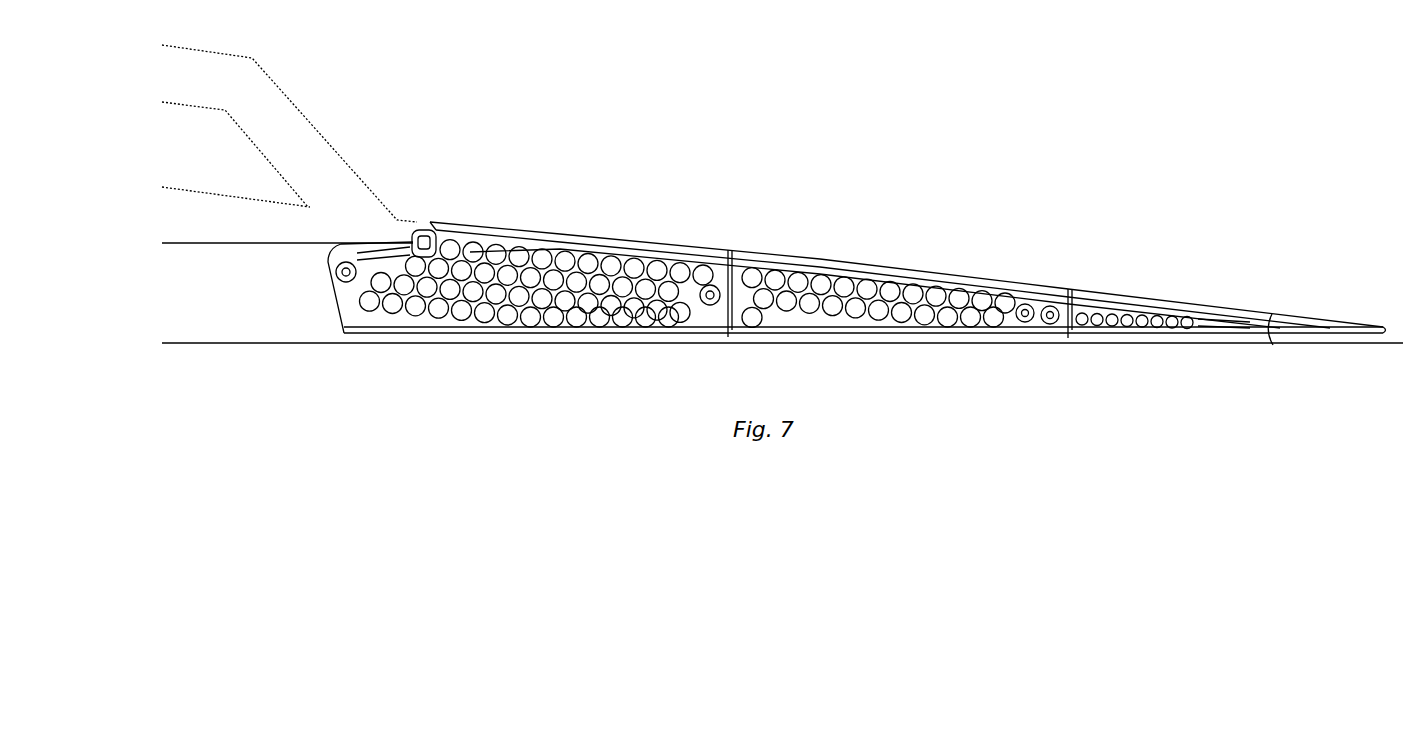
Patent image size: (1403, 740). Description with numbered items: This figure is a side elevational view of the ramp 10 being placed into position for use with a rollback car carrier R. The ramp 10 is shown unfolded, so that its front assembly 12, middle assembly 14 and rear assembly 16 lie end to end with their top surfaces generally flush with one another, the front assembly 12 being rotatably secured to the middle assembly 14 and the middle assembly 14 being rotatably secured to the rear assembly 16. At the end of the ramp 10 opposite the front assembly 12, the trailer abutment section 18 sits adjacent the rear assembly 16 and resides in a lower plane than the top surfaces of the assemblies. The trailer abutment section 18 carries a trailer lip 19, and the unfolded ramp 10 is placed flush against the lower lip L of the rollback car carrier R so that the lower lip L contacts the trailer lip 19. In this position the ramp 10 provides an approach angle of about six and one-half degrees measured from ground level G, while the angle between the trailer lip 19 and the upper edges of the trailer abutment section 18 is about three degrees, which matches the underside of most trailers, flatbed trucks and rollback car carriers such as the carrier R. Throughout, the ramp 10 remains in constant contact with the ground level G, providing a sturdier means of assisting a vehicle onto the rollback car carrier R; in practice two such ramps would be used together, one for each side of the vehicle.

The ramp 10 is at (857, 276).
The front assembly 12 is at (1182, 300).
The middle assembly 14 is at (965, 278).
The rear assembly 16 is at (611, 238).
The trailer abutment section 18 is at (393, 323).
The trailer lip 19 is at (437, 216).
The rollback car carrier R is at (297, 102).
The lower lip L is at (414, 214).
The angle β B is at (417, 240).
The ground level G is at (250, 348).